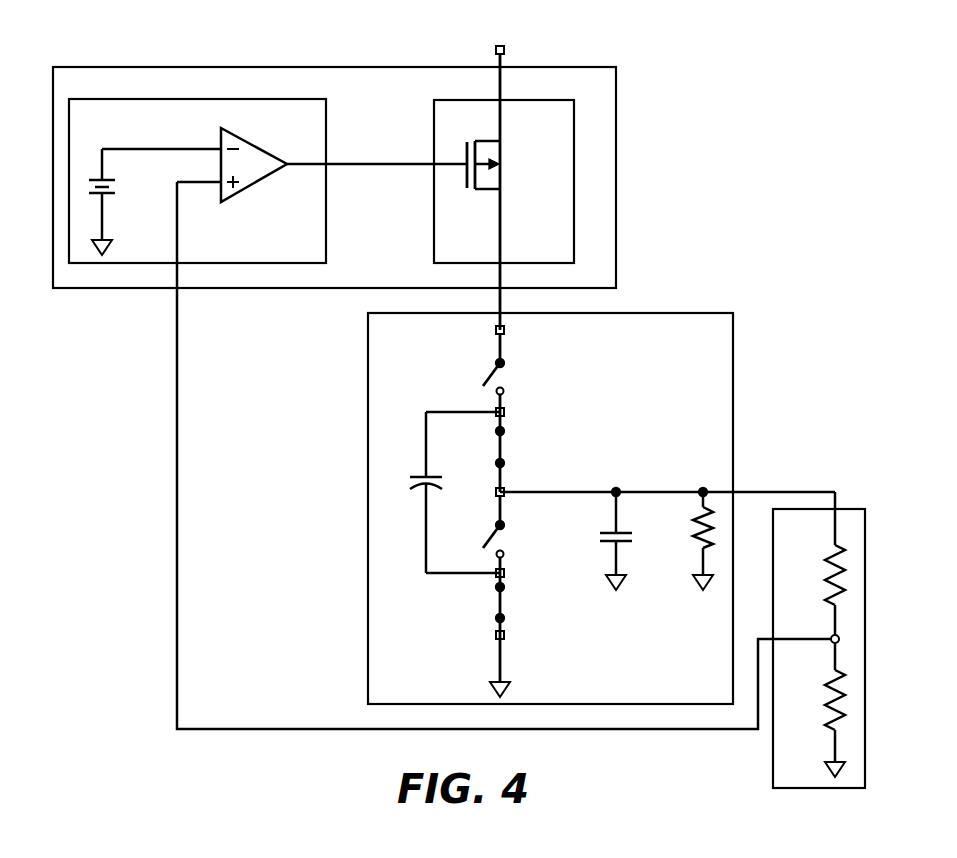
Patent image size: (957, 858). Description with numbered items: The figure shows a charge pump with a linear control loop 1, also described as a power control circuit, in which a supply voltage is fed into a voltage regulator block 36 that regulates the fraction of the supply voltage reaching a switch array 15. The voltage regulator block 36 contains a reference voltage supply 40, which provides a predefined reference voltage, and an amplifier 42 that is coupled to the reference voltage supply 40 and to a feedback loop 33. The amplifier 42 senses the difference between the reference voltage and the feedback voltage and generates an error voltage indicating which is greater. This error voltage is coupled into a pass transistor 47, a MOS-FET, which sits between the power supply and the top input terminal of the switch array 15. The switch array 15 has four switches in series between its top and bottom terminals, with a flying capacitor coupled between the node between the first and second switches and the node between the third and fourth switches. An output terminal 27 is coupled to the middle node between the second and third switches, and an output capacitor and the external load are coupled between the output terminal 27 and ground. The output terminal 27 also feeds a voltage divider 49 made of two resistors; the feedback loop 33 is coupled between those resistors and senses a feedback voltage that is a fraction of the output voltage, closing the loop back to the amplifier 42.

The linear control loop 1 is at (722, 88).
The voltage regulator block 36 is at (368, 67).
The amplifier 42 is at (260, 145).
The reference voltage supply 40 is at (96, 180).
The pass transistor 47 is at (491, 195).
The switch array 15 is at (368, 452).
The output terminal 27 is at (748, 492).
The feedback loop 33 is at (293, 731).
The voltage divider 49 is at (773, 760).